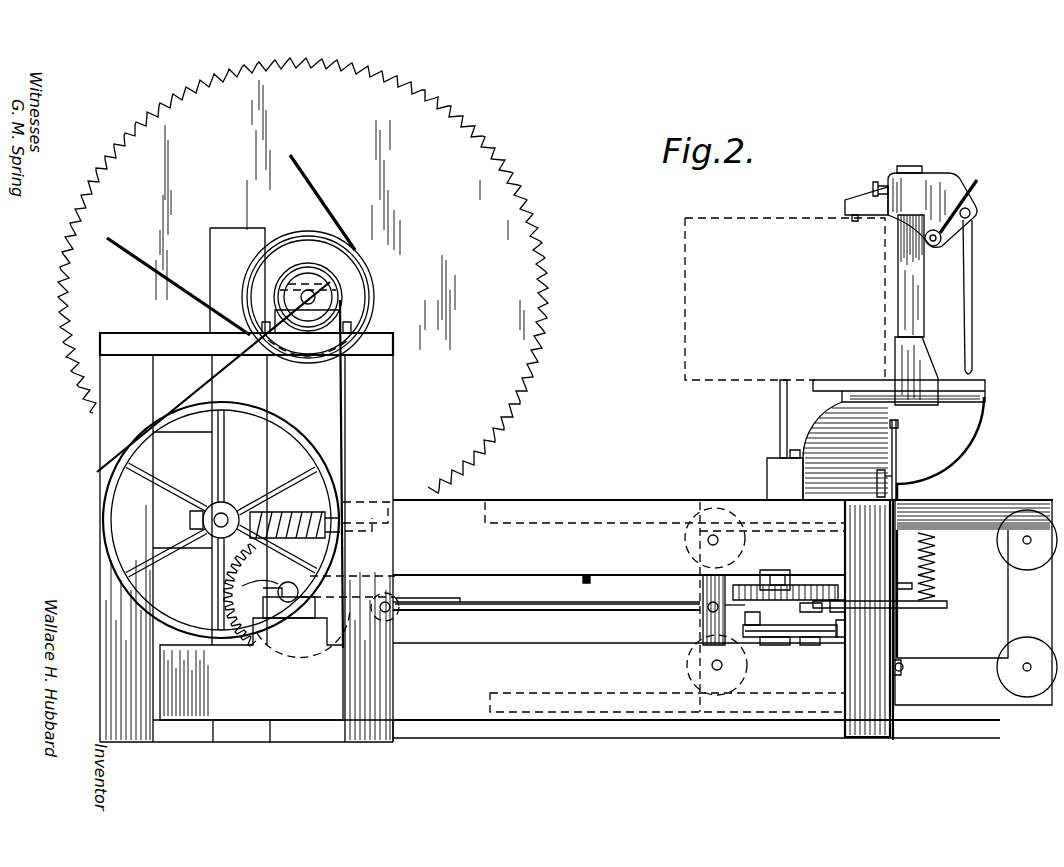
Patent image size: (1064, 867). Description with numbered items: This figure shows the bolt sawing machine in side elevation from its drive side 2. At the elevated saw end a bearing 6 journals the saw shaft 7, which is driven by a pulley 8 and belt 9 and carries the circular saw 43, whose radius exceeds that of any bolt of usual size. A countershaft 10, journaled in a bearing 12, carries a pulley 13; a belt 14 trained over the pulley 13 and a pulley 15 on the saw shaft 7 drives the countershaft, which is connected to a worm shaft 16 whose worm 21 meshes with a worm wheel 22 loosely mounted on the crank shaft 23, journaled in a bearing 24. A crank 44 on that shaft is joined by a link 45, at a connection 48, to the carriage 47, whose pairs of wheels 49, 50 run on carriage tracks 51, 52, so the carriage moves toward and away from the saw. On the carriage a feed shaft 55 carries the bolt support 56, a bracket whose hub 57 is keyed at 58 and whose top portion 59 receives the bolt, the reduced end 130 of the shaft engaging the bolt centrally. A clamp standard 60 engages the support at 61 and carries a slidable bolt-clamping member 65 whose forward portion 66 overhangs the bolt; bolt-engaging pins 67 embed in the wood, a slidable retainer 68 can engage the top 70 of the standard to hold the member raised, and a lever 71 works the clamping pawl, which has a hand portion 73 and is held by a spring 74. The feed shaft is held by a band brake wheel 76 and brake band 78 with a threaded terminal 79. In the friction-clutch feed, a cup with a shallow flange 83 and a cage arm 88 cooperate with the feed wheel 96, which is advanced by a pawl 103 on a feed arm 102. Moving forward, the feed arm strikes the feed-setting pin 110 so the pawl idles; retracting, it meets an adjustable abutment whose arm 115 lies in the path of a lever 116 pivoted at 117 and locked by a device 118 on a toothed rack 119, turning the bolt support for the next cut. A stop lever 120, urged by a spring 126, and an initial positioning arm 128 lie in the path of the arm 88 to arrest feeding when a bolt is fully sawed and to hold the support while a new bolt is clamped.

The drive side 2 is at (485, 510).
The bearing 6 is at (283, 348).
The main drive or saw shaft 7 is at (325, 300).
The pulley 8 is at (340, 252).
The belt 9 is at (313, 190).
The countershaft 10 is at (212, 522).
The bearing 12 is at (206, 514).
The pulley 13 is at (298, 428).
The belt 14 is at (185, 378).
The pulley 15 is at (345, 282).
The worm shaft 16 is at (332, 520).
The worm 21 is at (275, 510).
The worm wheel 22 is at (249, 595).
The carriage-actuating or crank shaft 23 is at (276, 594).
The bearing 24 is at (310, 615).
The circular saw 43 is at (525, 212).
The crank 44 is at (395, 628).
The link 45 is at (540, 612).
The carriage 47 is at (1022, 600).
The connection point 48 is at (708, 611).
The wheels 49 is at (1006, 652).
The wheels 50 is at (1004, 548).
The carriage track 51 is at (545, 700).
The carriage track 52 is at (556, 512).
The feed shaft 55 is at (789, 640).
The bolt support 56 is at (950, 436).
The hub 57 is at (767, 468).
The key 58 is at (796, 452).
The bolt-supporting top portion 59 is at (845, 386).
The clamp standard 60 is at (898, 295).
The engaging portion 61 is at (928, 352).
The bolt-clamping member 65 is at (940, 178).
The forwardly projecting portion 66 is at (858, 205).
The bolt-engaging pins 67 is at (855, 222).
The slidable retainer 68 is at (876, 182).
The top of the standard 70 is at (910, 168).
The lever 71 is at (972, 272).
The hand-adjusting portion 73 is at (972, 180).
The spring 74 is at (972, 211).
The band brake wheel 76 is at (810, 640).
The brake band 78 is at (770, 640).
The threaded terminal 79 is at (842, 630).
The shallow flange 83 is at (823, 609).
The arm 88 is at (740, 604).
The feed wheel 96 is at (703, 587).
The feed arm 102 is at (792, 582).
The pawl 103 is at (773, 584).
The arrester or feed-setting pin 110 is at (591, 579).
The arm 115 is at (934, 546).
The lever 116 is at (897, 466).
The pivot 117 is at (904, 668).
The locking device 118 is at (898, 476).
The toothed rack 119 is at (877, 482).
The stop lever 120 is at (912, 610).
The spring 126 is at (935, 590).
The initial positioning arm 128 is at (838, 605).
The reduced end 130 is at (780, 435).